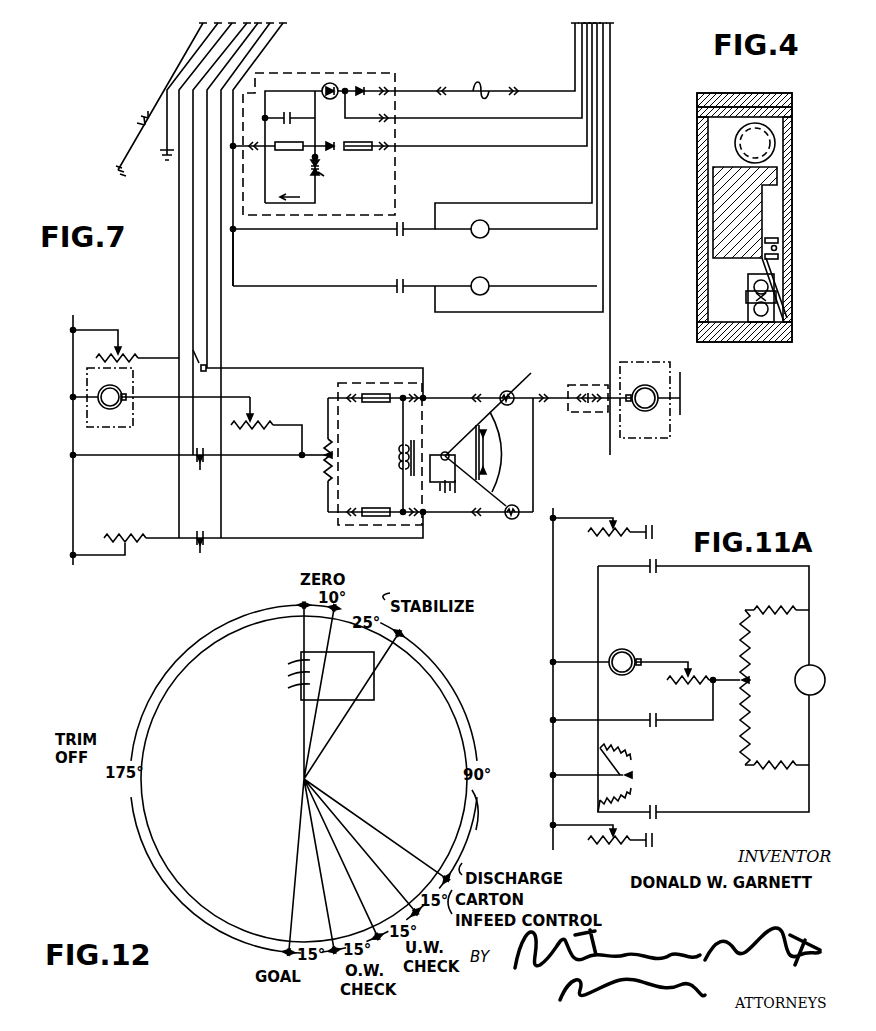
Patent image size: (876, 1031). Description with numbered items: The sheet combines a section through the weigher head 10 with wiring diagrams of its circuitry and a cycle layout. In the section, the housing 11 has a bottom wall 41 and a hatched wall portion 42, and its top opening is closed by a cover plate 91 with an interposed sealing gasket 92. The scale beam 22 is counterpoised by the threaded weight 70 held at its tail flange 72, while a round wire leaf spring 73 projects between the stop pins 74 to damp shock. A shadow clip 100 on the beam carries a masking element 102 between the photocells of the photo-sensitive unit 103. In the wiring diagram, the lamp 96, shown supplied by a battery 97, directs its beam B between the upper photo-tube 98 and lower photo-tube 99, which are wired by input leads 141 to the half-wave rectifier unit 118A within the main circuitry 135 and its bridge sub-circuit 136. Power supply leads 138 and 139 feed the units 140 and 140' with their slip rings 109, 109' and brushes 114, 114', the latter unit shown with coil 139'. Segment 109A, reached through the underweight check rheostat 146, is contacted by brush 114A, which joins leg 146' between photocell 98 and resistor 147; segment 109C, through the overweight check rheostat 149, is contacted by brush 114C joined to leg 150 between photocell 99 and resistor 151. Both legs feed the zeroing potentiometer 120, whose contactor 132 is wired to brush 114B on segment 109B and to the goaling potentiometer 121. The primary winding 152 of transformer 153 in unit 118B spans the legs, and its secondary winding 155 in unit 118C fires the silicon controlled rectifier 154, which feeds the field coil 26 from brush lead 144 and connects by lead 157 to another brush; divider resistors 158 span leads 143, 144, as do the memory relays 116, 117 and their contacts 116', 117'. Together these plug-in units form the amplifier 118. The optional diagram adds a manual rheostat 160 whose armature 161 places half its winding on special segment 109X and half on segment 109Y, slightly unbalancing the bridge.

In FIG. 7, the commutator brush lead 143 is at (221, 205).
In FIG. 7, the plug-in unit 118C is at (285, 73).
In FIG. 7, the silicon controlled rectifier 154 is at (327, 82).
In FIG. 7, the lead 157 is at (500, 124).
In FIG. 7, the voltage divider resistors 158 is at (295, 146).
In FIG. 7, the input leads 141 is at (445, 86).
In FIG. 7, the electromagnetic field coil 26 is at (481, 83).
In FIG. 7, the commutator brush lead 144 is at (608, 58).
In FIG. 7, the main commutator controlled circuitry 135 is at (613, 102).
In FIG. 7, the secondary winding 155 is at (318, 176).
In FIG. 7, the transformer 153 is at (318, 180).
In FIG. 11A, the transformer 153 is at (805, 665).
In FIG. 7, the contacts of overweight memory relay 116' is at (414, 142).
In FIG. 7, the overweight memory relay 116 is at (517, 144).
In FIG. 7, the contacts of underweight memory relay 117' is at (322, 279).
In FIG. 7, the underweight memory relay 117 is at (505, 167).
In FIG. 7, the electrical power supply lead 138 is at (73, 538).
In FIG. 11A, the electrical power supply lead 138 is at (553, 656).
In FIG. 7, the underweight check rheostat 146 is at (126, 337).
In FIG. 11A, the underweight check rheostat 146 is at (699, 565).
In FIG. 7, the commutator segment 109A is at (198, 354).
In FIG. 11A, the commutator segment 109A is at (660, 505).
In FIG. 7, the brush 114A is at (207, 368).
In FIG. 11A, the brush 114A is at (660, 573).
In FIG. 7, the slip ring unit 140' is at (77, 393).
In FIG. 7, the slip ring unit coil 139' is at (135, 404).
In FIG. 7, the brush 114' is at (149, 407).
In FIG. 11A, the brush 114' is at (659, 647).
In FIG. 7, the slip ring 109' is at (133, 431).
In FIG. 11A, the slip ring 109' is at (622, 669).
In FIG. 7, the contactor 132 is at (251, 415).
In FIG. 11A, the contactor 132 is at (720, 676).
In FIG. 7, the goaling potentiometer 121 is at (240, 428).
In FIG. 11A, the goaling potentiometer 121 is at (666, 683).
In FIG. 7, the commutator segment 109B is at (196, 458).
In FIG. 11A, the commutator segment 109B is at (657, 728).
In FIG. 7, the overweight check rheostat 149 is at (116, 528).
In FIG. 11A, the overweight check rheostat 149 is at (611, 841).
In FIG. 7, the commutator segment 109C is at (197, 545).
In FIG. 11A, the commutator segment 109C is at (660, 840).
In FIG. 7, the brush 114C is at (205, 545).
In FIG. 11A, the brush 114C is at (660, 812).
In FIG. 7, the plug-in unit 118B is at (390, 530).
In FIG. 7, the voltage divider resistor 147 is at (378, 392).
In FIG. 11A, the voltage divider resistor 147 is at (790, 594).
In FIG. 7, the conducting leg 146' is at (454, 377).
In FIG. 7, the upper photo-tube 98 is at (531, 380).
In FIG. 4, the upper photo-tube 98 is at (745, 295).
In FIG. 7, the primary winding 152 is at (403, 445).
In FIG. 7, the zeroing potentiometer 120 is at (333, 456).
In FIG. 11A, the zeroing potentiometer 120 is at (747, 655).
In FIG. 7, the voltage divider resistor 151 is at (377, 506).
In FIG. 11A, the voltage divider resistor 151 is at (790, 771).
In FIG. 7, the beam of lamp B is at (469, 452).
In FIG. 7, the lamp 96 is at (455, 446).
In FIG. 7, the battery 97 is at (445, 496).
In FIG. 7, the masking element 102 is at (448, 486).
In FIG. 4, the masking element 102 is at (746, 297).
In FIG. 7, the leg 150 is at (458, 514).
In FIG. 11A, the leg 150 is at (809, 765).
In FIG. 7, the lower photo-tube 99 is at (512, 520).
In FIG. 4, the lower photo-tube 99 is at (790, 322).
In FIG. 7, the bridge sub-circuit 136 is at (572, 428).
In FIG. 11A, the bridge sub-circuit 136 is at (808, 800).
In FIG. 7, the half-wave diode rectifier unit 118A is at (603, 422).
In FIG. 7, the slip ring unit 140 is at (678, 417).
In FIG. 7, the brush 114 is at (635, 429).
In FIG. 7, the slip ring 109 is at (670, 412).
In FIG. 7, the electrical power supply lead 139 is at (706, 393).
In FIG. 4, the weigher head 10 is at (695, 240).
In FIG. 4, the cover plate 91 is at (760, 92).
In FIG. 4, the sealing gasket 92 is at (768, 107).
In FIG. 4, the housing 11 is at (791, 190).
In FIG. 4, the wall 42 is at (698, 288).
In FIG. 4, the bottom wall 41 is at (700, 333).
In FIG. 4, the weight 70 is at (774, 138).
In FIG. 4, the scale beam 22 is at (713, 193).
In FIG. 4, the tail flange 72 is at (779, 170).
In FIG. 4, the upper stop pins 74 is at (779, 240).
In FIG. 4, the leaf spring 73 is at (779, 247).
In FIG. 4, the shadow clip 100 is at (765, 268).
In FIG. 4, the photo-sensitive unit 103 is at (755, 320).
In FIG. 11A, the special commutator segment 109X is at (651, 574).
In FIG. 11A, the amplifier 118 is at (800, 692).
In FIG. 11A, the brush 114B is at (660, 718).
In FIG. 11A, the armature 161 is at (606, 762).
In FIG. 11A, the manual rheostat 160 is at (612, 785).
In FIG. 11A, the commutator segment 109Y is at (653, 806).